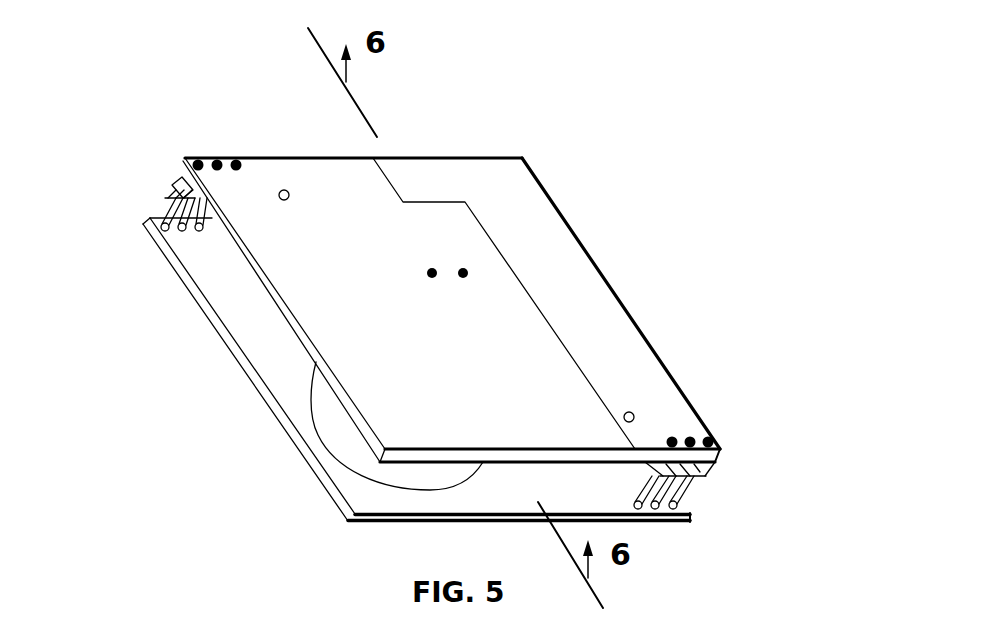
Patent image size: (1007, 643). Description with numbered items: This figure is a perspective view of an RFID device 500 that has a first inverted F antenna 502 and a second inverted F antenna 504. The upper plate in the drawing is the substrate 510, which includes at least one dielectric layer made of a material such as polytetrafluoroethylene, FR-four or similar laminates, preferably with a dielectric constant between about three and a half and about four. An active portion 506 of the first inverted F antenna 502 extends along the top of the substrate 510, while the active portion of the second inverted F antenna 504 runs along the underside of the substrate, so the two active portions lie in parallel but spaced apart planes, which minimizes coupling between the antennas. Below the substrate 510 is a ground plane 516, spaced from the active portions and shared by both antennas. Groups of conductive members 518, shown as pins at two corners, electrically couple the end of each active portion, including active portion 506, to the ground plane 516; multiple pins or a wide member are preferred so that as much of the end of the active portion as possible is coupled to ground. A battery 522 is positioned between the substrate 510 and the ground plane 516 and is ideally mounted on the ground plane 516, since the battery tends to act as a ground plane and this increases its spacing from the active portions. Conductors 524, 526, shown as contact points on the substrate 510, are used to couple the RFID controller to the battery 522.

The RFID device 500 is at (104, 110).
The first inverted F antenna 502 is at (592, 239).
The second inverted F antenna 504 is at (196, 321).
The active portion 506 is at (657, 377).
The substrate 510 is at (287, 157).
The ground plane 516 is at (172, 270).
The conductive members 518 is at (162, 212).
The battery 522 is at (330, 428).
The conductor 524 is at (432, 271).
The conductor 526 is at (463, 276).